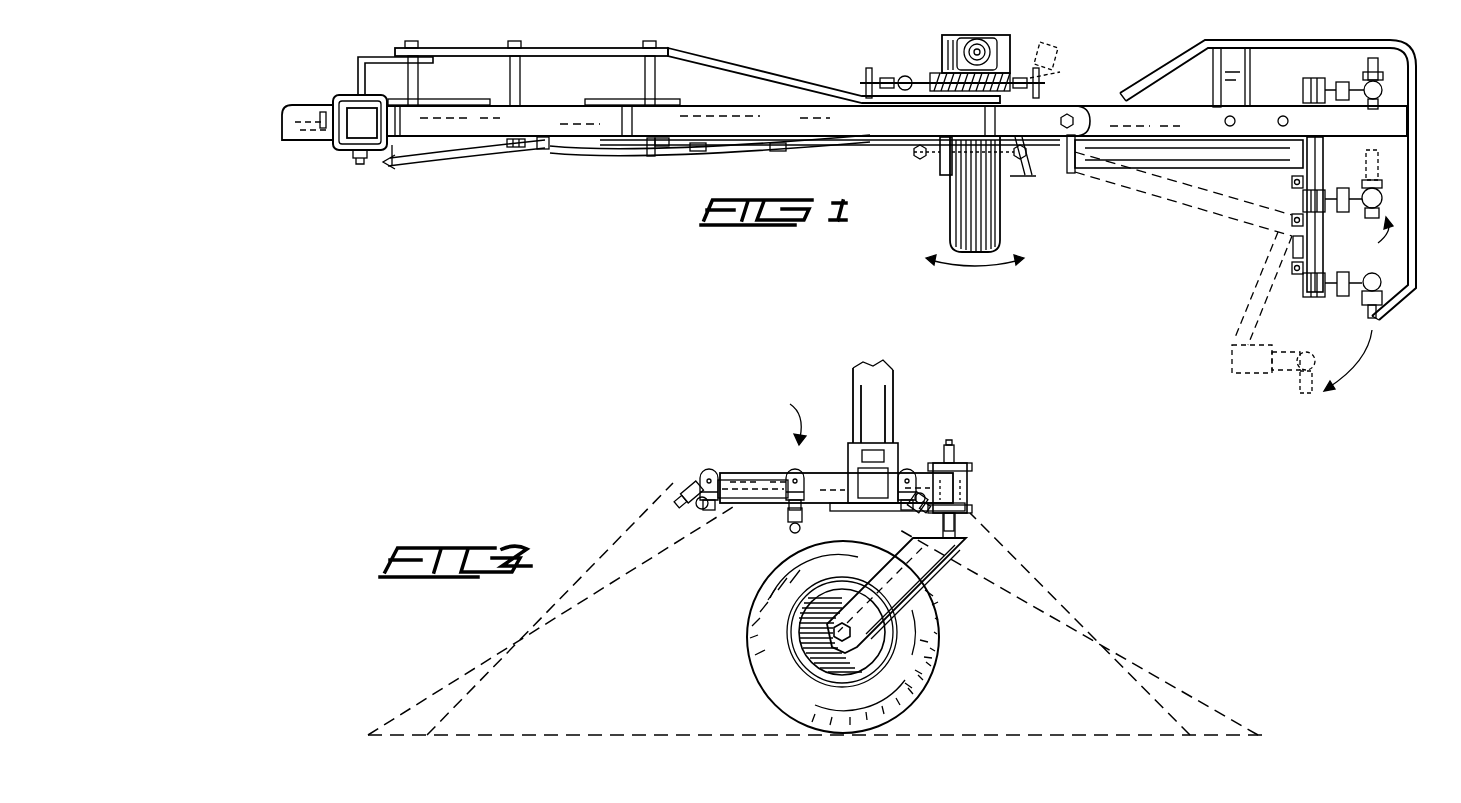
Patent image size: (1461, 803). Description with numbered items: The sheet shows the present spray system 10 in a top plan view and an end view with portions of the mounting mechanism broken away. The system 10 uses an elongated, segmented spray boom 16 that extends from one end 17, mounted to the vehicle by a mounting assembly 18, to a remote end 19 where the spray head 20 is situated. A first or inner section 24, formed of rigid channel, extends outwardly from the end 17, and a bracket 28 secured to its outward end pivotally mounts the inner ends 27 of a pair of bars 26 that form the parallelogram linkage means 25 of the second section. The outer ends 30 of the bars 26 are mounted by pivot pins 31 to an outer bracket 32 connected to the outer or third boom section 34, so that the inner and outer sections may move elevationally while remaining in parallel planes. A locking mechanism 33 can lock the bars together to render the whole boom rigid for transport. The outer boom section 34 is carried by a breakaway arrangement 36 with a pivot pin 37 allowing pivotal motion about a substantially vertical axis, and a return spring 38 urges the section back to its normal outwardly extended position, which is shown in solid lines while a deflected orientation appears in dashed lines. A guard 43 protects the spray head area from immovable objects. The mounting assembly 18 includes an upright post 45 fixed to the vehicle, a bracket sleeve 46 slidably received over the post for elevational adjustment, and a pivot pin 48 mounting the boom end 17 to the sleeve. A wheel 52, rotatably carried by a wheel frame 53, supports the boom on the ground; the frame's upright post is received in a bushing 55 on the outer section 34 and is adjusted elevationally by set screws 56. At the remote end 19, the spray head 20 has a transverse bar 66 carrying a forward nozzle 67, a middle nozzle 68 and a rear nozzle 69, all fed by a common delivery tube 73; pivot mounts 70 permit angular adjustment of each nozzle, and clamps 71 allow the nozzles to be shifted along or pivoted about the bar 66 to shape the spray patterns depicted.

In FIG. 1, the system 10 is at (812, 70).
In FIG. 2, the system 10 is at (915, 424).
In FIG. 1, the spray boom 16 is at (716, 152).
In FIG. 2, the spray boom 16 is at (852, 458).
In FIG. 1, the one end 17 is at (398, 160).
In FIG. 1, the mounting assembly 18 is at (355, 162).
In FIG. 1, the remote end 19 is at (1290, 106).
In FIG. 1, the spray head 20 is at (1358, 304).
In FIG. 2, the spray head 20 is at (787, 417).
In FIG. 1, the first or inner section 24 is at (553, 116).
In FIG. 1, the parallelogram linkage means 25 is at (858, 138).
In FIG. 1, the bars 26 is at (745, 108).
In FIG. 1, the inner ends 27 is at (655, 136).
In FIG. 1, the bracket 28 is at (605, 152).
In FIG. 1, the outer ends 30 is at (954, 121).
In FIG. 1, the pivot pins 31 is at (985, 118).
In FIG. 1, the outer bracket 32 is at (1027, 156).
In FIG. 1, the locking mechanism 33 is at (830, 118).
In FIG. 1, the outer or third boom section 34 is at (1188, 106).
In FIG. 1, the breakaway arrangement 36 is at (1073, 108).
In FIG. 1, the pivot pin 37 is at (1077, 120).
In FIG. 1, the return spring 38 is at (1012, 68).
In FIG. 1, the guard 43 is at (1260, 40).
In FIG. 1, the post 45 is at (330, 152).
In FIG. 1, the bracket sleeve 46 is at (346, 95).
In FIG. 1, the pivot pin 48 is at (422, 82).
In FIG. 1, the wheel 52 is at (965, 212).
In FIG. 2, the wheel 52 is at (753, 607).
In FIG. 1, the wheel frame 53 is at (942, 176).
In FIG. 2, the wheel frame 53 is at (928, 572).
In FIG. 2, the bushing 55 is at (972, 490).
In FIG. 2, the set screws 56 is at (955, 452).
In FIG. 1, the bar 66 is at (1316, 160).
In FIG. 2, the bar 66 is at (755, 478).
In FIG. 1, the forward nozzle 67 is at (1386, 84).
In FIG. 2, the forward nozzle 67 is at (917, 510).
In FIG. 1, the middle nozzle 68 is at (1382, 195).
In FIG. 2, the middle nozzle 68 is at (797, 512).
In FIG. 1, the rear nozzle 69 is at (1374, 318).
In FIG. 2, the rear nozzle 69 is at (688, 482).
In FIG. 1, the pivot mounts 70 is at (1344, 82).
In FIG. 2, the pivot mounts 70 is at (706, 512).
In FIG. 1, the clamps 71 is at (1320, 78).
In FIG. 2, the clamps 71 is at (709, 470).
In FIG. 1, the common delivery tube 73 is at (758, 153).